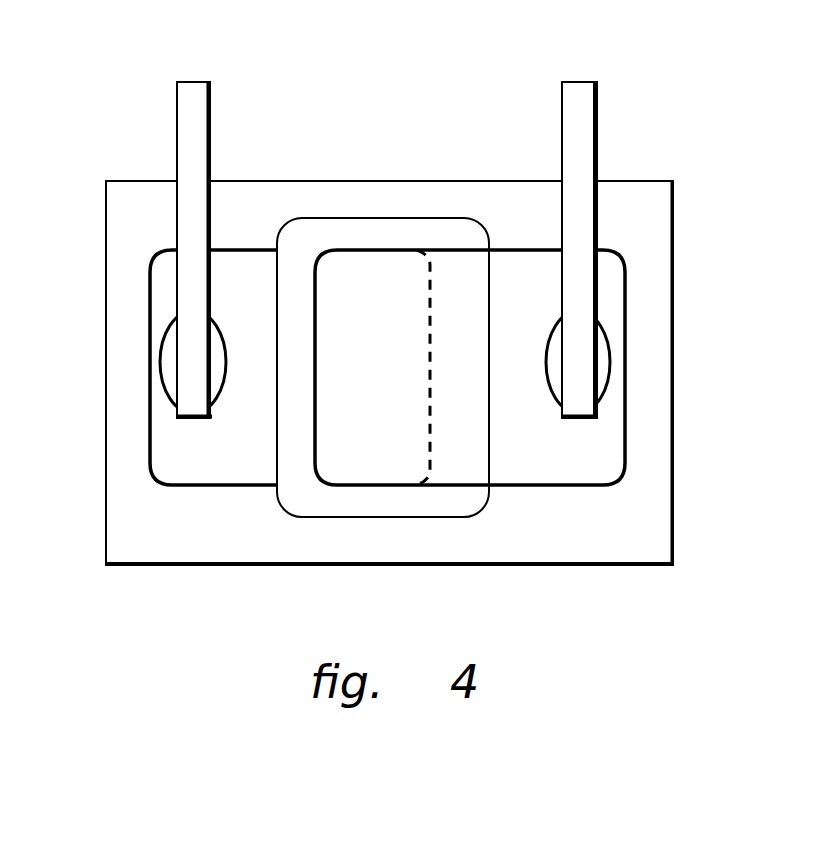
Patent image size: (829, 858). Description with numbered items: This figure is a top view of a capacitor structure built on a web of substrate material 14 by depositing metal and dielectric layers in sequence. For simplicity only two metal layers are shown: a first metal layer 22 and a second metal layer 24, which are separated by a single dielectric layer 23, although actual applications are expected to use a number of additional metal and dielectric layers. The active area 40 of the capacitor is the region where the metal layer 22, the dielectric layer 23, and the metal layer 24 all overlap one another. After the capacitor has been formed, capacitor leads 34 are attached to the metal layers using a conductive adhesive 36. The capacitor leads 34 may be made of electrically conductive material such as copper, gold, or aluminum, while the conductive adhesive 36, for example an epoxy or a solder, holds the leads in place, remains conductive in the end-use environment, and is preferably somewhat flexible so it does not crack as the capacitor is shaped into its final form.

The substrate 14 is at (578, 518).
The metal layer 22 is at (193, 457).
The dielectric layer 23 is at (387, 500).
The metal layer 24 is at (473, 467).
The capacitor leads 34 is at (198, 96).
The conductive adhesive 36 is at (168, 362).
The active area 40 is at (365, 454).